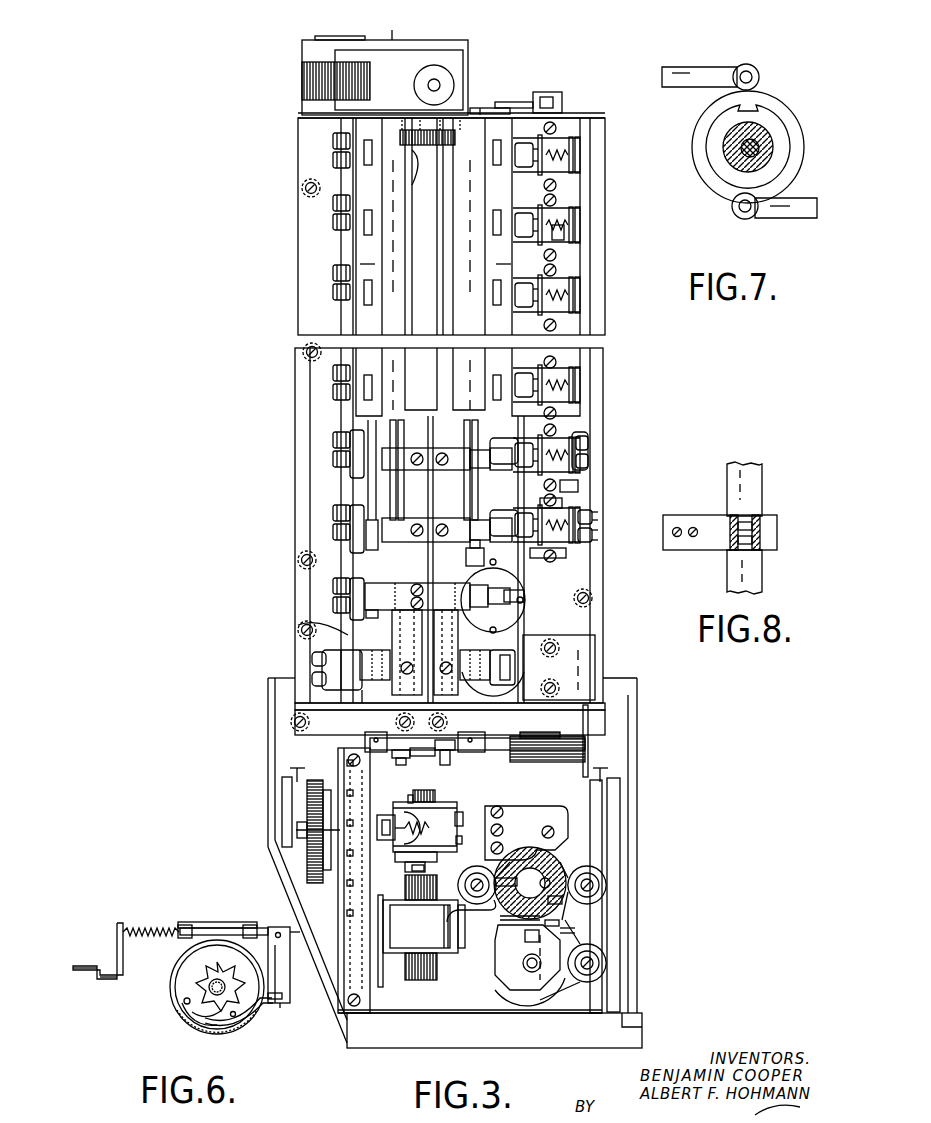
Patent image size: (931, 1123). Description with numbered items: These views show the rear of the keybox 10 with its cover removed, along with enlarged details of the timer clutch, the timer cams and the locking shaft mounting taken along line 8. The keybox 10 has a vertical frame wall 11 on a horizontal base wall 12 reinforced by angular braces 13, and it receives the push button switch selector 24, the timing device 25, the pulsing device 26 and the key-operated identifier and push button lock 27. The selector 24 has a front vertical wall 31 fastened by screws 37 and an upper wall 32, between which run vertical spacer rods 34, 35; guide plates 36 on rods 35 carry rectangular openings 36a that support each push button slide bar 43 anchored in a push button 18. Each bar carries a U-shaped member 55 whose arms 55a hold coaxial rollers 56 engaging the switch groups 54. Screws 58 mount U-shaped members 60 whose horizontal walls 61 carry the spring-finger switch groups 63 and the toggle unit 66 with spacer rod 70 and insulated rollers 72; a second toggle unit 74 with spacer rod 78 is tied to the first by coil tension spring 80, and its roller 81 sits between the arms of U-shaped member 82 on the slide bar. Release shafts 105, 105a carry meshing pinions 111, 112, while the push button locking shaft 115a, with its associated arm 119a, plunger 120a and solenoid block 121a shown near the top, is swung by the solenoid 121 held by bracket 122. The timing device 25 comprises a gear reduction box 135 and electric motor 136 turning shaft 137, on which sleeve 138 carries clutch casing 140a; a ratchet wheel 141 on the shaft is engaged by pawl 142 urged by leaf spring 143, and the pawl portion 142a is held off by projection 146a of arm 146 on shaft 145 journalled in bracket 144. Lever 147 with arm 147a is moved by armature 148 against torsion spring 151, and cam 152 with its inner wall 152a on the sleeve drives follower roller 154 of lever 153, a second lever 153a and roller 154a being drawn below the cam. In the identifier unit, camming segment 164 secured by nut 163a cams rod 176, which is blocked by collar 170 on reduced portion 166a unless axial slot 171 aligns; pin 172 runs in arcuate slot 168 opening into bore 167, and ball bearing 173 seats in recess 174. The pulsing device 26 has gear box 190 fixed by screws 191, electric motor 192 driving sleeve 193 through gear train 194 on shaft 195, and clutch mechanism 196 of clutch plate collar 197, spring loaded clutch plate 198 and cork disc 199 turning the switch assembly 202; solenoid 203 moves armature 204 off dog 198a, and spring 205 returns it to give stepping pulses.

In FIG. 3, the section line 8— 8 is at (505, 580).
In FIG. 3, the keybox 10 is at (613, 425).
In FIG. 3, the vertical frame wall 11 is at (290, 742).
In FIG. 3, the horizontal base wall 12 is at (630, 1042).
In FIG. 3, the angular braces 13 is at (283, 788).
In FIG. 3, the push buttons 18 is at (588, 300).
In FIG. 3, the push button switch selector 24 is at (608, 505).
In FIG. 3, the timing device 25 is at (402, 29).
In FIG. 3, the pulsing device 26 is at (334, 770).
In FIG. 3, the key-operated identifier and push button lock 27 is at (588, 832).
In FIG. 3, the front vertical wall 31 is at (305, 430).
In FIG. 3, the horizontal upper wall 32 is at (583, 117).
In FIG. 3, the vertical spacer rods 34 is at (596, 656).
In FIG. 3, the vertical spacer rods 35 is at (398, 214).
In FIG. 3, the guide plates 36 is at (434, 257).
In FIG. 3, the rectangular openings 36a is at (370, 210).
In FIG. 3, the screws 37 is at (300, 628).
In FIG. 3, the push button slide bar 43 is at (358, 490).
In FIG. 3, the switch groups 54 is at (318, 655).
In FIG. 3, the U-shaped member 55 is at (360, 708).
In FIG. 3, the transversely extending arms 55a is at (338, 620).
In FIG. 3, the coaxial rollers 56 is at (333, 142).
In FIG. 3, the screws 58 is at (560, 505).
In FIG. 3, the U-shaped members 60 is at (575, 490).
In FIG. 3, the horizontal walls 61 is at (548, 552).
In FIG. 3, the switch groups 63 is at (598, 548).
In FIG. 3, the toggle unit 66 is at (585, 430).
In FIG. 3, the spacer rod 70 is at (575, 372).
In FIG. 3, the insulated rollers 72 is at (590, 457).
In FIG. 3, the toggle unit 74 is at (540, 565).
In FIG. 3, the spacer rod 78 is at (535, 442).
In FIG. 3, the coil tension spring 80 is at (566, 235).
In FIG. 3, the roller 81 is at (535, 510).
In FIG. 3, the U-shaped member 82 is at (500, 528).
In FIG. 3, the rotatable shaft 105 is at (447, 290).
In FIG. 3, the rotatable shaft 105a is at (412, 262).
In FIG. 3, the pinion 111 is at (450, 142).
In FIG. 3, the pinion 112 is at (412, 165).
In FIG. 3, the push button locking shaft 115a is at (479, 112).
In FIG. 8, the push button locking shaft 115a is at (755, 492).
In FIG. 3, the plate 119a is at (486, 108).
In FIG. 3, the plate 120a is at (520, 103).
In FIG. 3, the solenoid 121 is at (540, 762).
In FIG. 3, the block 121a is at (556, 96).
In FIG. 3, the bracket 122 is at (588, 765).
In FIG. 3, the gear reduction box 135 is at (440, 50).
In FIG. 3, the electric motor 136 is at (442, 84).
In FIG. 6, the shaft 137 is at (208, 985).
In FIG. 7, the shaft 137 is at (740, 152).
In FIG. 7, the sleeve 138 is at (735, 137).
In FIG. 6, the clutch casing 140a is at (222, 1034).
In FIG. 6, the ratchet wheel 141 is at (208, 972).
In FIG. 6, the pawl 142 is at (263, 1013).
In FIG. 6, the projecting portion 142a is at (282, 995).
In FIG. 6, the leaf spring 143 is at (192, 1020).
In FIG. 6, the bracket 144 is at (225, 925).
In FIG. 6, the shaft 145 is at (215, 930).
In FIG. 6, the arm 146 is at (283, 978).
In FIG. 6, the projection 146a is at (288, 1004).
In FIG. 6, the lever 147 is at (118, 941).
In FIG. 6, the arm 147a is at (114, 980).
In FIG. 6, the armature 148 is at (83, 972).
In FIG. 6, the torsion spring 151 is at (135, 930).
In FIG. 7, the cam 152 is at (793, 127).
In FIG. 7, the ring inner wall 152a is at (778, 170).
In FIG. 7, the lever 153 is at (715, 66).
In FIG. 7, the arm 153a is at (788, 214).
In FIG. 7, the follower roller 154 is at (752, 66).
In FIG. 7, the pivot 154a is at (742, 220).
In FIG. 3, the nut 163a is at (545, 996).
In FIG. 3, the camming segment 164 is at (500, 968).
In FIG. 3, the reduced diametrical portion 166a is at (545, 880).
In FIG. 3, the concentric bore 167 is at (560, 905).
In FIG. 3, the arcuate transverse peripheral slot 168 is at (530, 850).
In FIG. 3, the collar 170 is at (588, 865).
In FIG. 3, the axial slot 171 is at (525, 935).
In FIG. 3, the radial pin 172 is at (425, 866).
In FIG. 3, the spring loaded ball bearing 173 is at (535, 845).
In FIG. 3, the concentric recess 174 is at (510, 920).
In FIG. 3, the rod 176 is at (558, 925).
In FIG. 3, the gear box 190 is at (470, 880).
In FIG. 3, the screws 191 is at (366, 758).
In FIG. 3, the electric motor 192 is at (420, 968).
In FIG. 3, the sleeve 193 is at (366, 838).
In FIG. 3, the gear train 194 is at (368, 880).
In FIG. 3, the shaft 195 is at (298, 829).
In FIG. 3, the clutch mechanism 196 is at (460, 810).
In FIG. 3, the clutch plate collar 197 is at (390, 815).
In FIG. 3, the spring loaded clutch plate 198 is at (425, 840).
In FIG. 3, the dog 198a is at (476, 822).
In FIG. 3, the cork disc 199 is at (415, 814).
In FIG. 3, the switch assembly 202 is at (307, 858).
In FIG. 3, the solenoid 203 is at (446, 800).
In FIG. 3, the armature 204 is at (412, 790).
In FIG. 3, the spring 205 is at (430, 795).